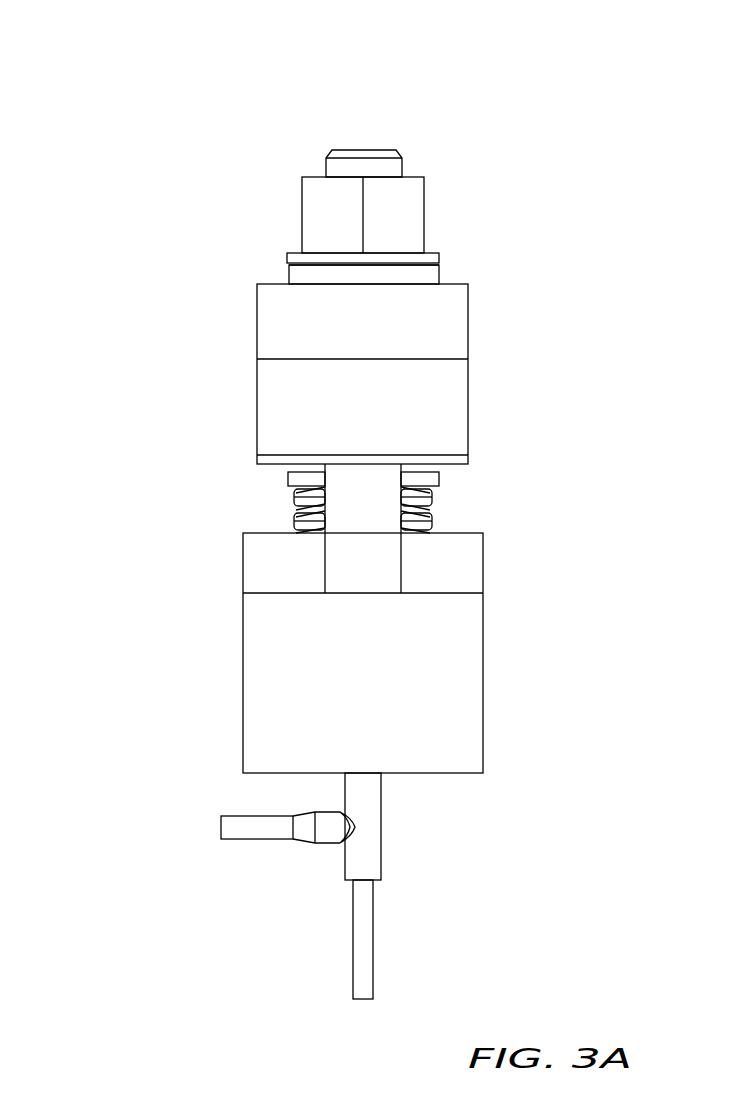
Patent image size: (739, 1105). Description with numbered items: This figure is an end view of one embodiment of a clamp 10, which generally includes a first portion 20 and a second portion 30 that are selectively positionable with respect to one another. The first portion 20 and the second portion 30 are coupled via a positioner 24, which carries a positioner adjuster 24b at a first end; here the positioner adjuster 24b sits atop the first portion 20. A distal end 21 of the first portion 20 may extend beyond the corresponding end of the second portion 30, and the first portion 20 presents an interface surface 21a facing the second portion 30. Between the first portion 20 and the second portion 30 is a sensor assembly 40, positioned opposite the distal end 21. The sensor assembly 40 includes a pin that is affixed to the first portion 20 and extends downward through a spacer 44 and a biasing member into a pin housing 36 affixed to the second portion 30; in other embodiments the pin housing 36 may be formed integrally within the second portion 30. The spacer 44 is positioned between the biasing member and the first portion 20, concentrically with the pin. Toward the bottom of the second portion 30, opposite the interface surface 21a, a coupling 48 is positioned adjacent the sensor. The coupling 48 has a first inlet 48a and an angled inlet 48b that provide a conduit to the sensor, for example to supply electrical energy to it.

The clamp 10 is at (495, 128).
The first portion 20 is at (239, 313).
The distal end 21 is at (295, 403).
The interface surface 21a is at (273, 464).
The positioner 24 is at (337, 555).
The positioner adjuster 24b is at (308, 202).
The second portion 30 is at (220, 703).
The pin housing 36 is at (467, 573).
The sensor assembly 40 is at (444, 497).
The spacer 44 is at (435, 481).
The coupling 48 is at (375, 792).
The first inlet 48a is at (358, 969).
The angled inlet 48b is at (230, 830).